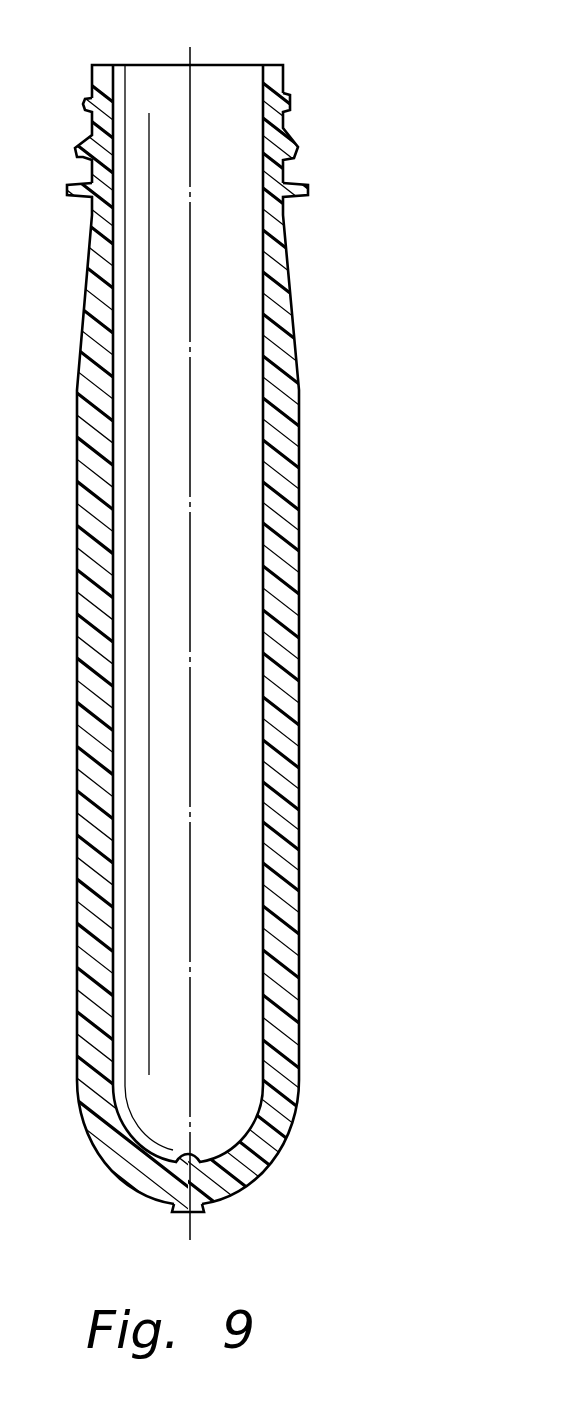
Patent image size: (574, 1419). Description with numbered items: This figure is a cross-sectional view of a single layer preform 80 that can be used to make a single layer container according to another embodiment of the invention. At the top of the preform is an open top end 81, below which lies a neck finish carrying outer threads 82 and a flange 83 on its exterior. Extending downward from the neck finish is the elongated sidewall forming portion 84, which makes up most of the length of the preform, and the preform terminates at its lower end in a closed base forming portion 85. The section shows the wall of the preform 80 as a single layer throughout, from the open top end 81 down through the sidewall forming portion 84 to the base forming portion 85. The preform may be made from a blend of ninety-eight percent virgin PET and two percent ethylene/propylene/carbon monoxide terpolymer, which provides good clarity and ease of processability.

The single layer preform 80 is at (262, 661).
The open top end 81 is at (233, 65).
The outer threads 82 is at (290, 98).
The flange 83 is at (308, 190).
The sidewall forming portion 84 is at (300, 532).
The base forming portion 85 is at (232, 1190).